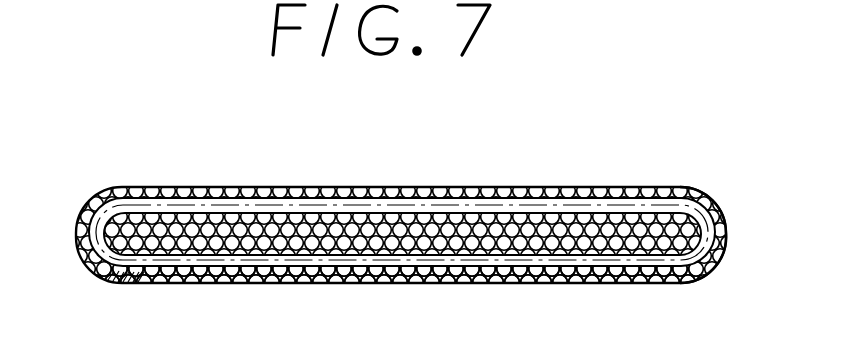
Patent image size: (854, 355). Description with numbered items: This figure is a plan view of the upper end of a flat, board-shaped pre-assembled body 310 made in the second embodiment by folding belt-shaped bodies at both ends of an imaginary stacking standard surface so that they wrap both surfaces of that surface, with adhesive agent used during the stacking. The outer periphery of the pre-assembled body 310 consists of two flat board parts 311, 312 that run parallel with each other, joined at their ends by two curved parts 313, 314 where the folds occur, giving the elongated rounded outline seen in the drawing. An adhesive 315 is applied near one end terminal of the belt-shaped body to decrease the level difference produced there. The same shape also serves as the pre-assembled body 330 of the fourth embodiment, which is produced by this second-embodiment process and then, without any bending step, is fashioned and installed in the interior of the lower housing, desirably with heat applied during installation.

The pre-assembled body 310 is at (406, 208).
The pre-assembled body 330 is at (406, 208).
The flat board part 311 is at (570, 188).
The flat board part 312 is at (522, 284).
The curved part 313 is at (74, 218).
The curved part 314 is at (726, 226).
The adhesive 315 is at (120, 279).